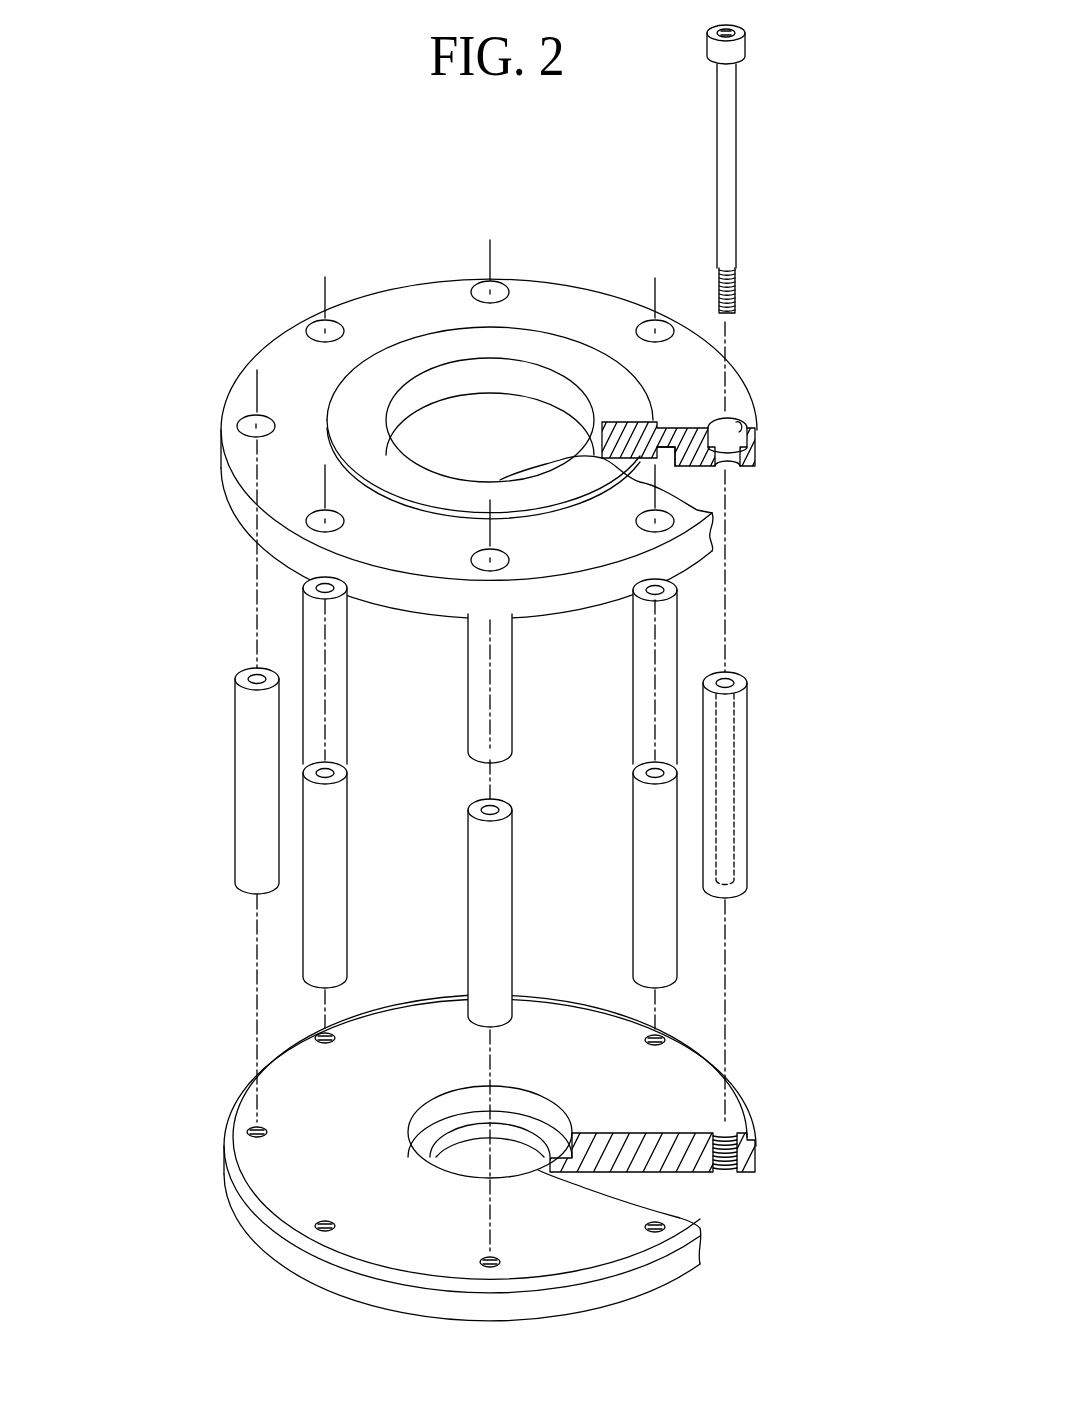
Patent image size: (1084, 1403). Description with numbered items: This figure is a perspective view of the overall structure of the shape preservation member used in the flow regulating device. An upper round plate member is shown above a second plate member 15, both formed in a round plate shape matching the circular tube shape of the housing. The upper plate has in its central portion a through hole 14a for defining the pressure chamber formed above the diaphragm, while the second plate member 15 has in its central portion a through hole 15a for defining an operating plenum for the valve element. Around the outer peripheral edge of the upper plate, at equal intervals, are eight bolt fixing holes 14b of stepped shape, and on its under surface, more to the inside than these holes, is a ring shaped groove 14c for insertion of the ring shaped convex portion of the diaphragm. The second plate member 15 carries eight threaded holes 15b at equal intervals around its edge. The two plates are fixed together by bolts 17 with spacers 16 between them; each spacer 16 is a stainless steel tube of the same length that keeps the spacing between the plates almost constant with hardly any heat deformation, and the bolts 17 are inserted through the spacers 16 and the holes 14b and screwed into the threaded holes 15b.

The through hole 14a is at (410, 407).
The bolt fixing holes 14b is at (653, 325).
The ring shaped groove 14c is at (662, 448).
The second plate member 15 is at (663, 1270).
The through hole 15a is at (433, 1166).
The threaded holes 15b is at (323, 1036).
The spacers 16 is at (312, 808).
The bolts 17 is at (730, 185).